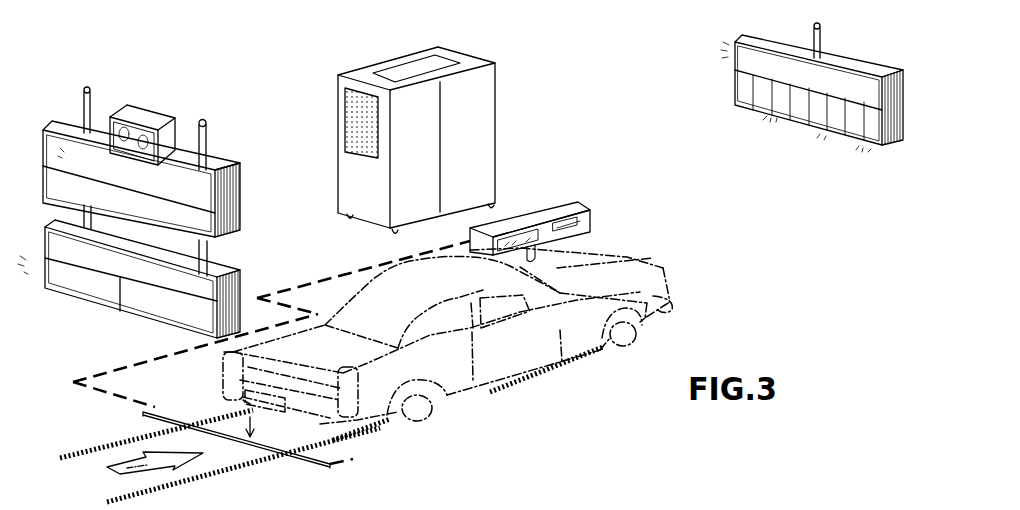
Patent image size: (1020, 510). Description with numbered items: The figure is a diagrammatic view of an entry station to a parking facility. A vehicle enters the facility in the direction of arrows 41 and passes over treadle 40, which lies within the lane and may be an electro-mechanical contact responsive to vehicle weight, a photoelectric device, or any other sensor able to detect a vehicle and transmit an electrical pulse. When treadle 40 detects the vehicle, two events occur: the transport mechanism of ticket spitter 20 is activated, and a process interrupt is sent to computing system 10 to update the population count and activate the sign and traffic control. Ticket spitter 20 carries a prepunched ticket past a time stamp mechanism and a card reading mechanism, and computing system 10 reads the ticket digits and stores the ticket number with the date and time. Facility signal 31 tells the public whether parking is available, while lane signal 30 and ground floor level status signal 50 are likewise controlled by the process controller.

The computing system 10 is at (492, 158).
The ticket spitter 20 is at (583, 219).
The lane signal 30 is at (238, 281).
The facility signal 31 is at (220, 170).
The treadle 40 is at (323, 462).
The arrows 41 is at (107, 467).
The ground floor level status signal 50 is at (807, 126).